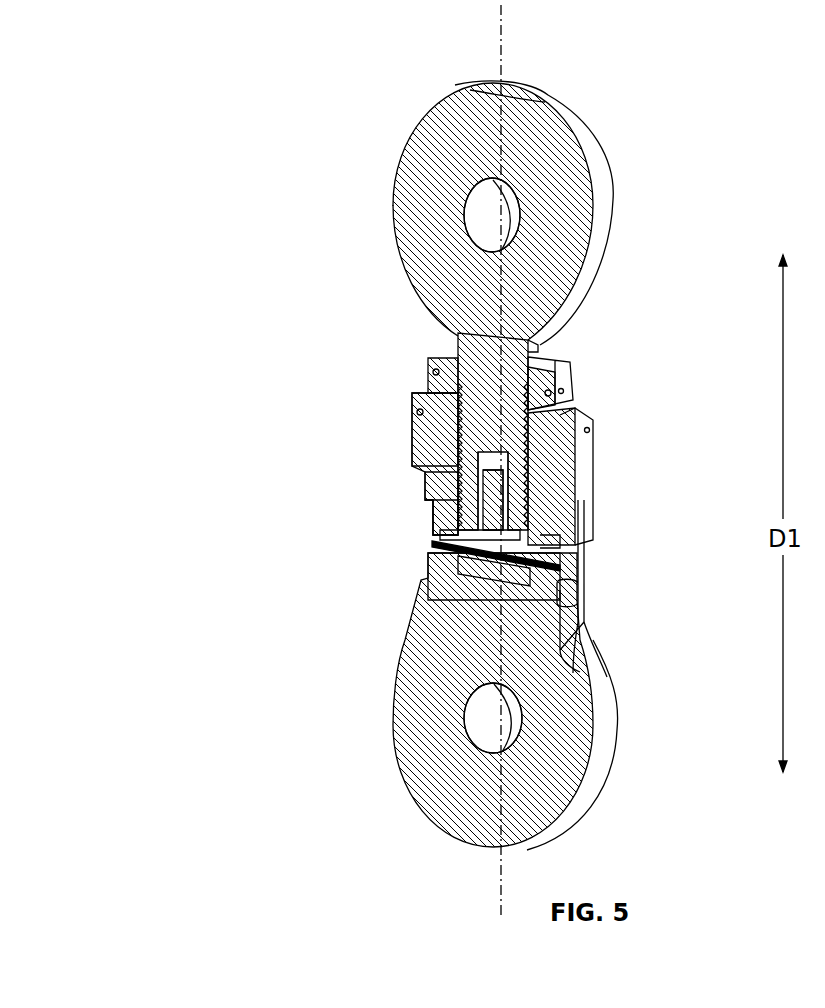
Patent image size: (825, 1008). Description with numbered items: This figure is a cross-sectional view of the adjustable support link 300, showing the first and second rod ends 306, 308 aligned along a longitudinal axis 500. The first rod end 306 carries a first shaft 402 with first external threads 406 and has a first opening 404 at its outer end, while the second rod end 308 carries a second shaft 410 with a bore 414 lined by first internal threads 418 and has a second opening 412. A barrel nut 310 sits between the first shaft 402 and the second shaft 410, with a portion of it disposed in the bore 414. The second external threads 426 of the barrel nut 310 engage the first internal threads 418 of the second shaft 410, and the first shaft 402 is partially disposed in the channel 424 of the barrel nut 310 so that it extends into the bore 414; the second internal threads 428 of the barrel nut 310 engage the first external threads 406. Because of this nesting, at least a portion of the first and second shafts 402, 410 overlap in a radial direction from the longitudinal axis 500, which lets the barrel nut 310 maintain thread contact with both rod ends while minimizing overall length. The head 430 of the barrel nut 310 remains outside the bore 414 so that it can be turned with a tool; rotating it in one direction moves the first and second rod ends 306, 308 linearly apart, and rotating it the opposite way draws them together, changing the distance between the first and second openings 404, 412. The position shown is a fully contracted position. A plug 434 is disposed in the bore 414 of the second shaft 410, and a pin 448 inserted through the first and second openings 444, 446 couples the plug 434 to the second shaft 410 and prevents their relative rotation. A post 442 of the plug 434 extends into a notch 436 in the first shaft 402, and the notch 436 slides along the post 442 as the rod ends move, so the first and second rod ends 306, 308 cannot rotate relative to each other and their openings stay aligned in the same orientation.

The adjustable support link 300 is at (232, 52).
The longitudinal axis 500 is at (500, 20).
The first rod end 306 is at (452, 287).
The first opening 404 is at (490, 215).
The first shaft 402 is at (457, 382).
The first external threads 406 is at (520, 510).
The second internal threads 428 is at (662, 506).
The barrel nut 310 is at (413, 437).
The bore 414 is at (432, 445).
The first internal threads 418 is at (425, 483).
The second external threads 426 is at (364, 511).
The head 430 is at (557, 370).
The channel 424 is at (543, 455).
The pin 448 is at (540, 555).
The plug 434 is at (565, 562).
The notch 436 is at (545, 535).
The post 442 is at (557, 538).
The second shaft 410 is at (430, 535).
The second rod end 308 is at (423, 650).
The second opening 412 is at (492, 718).
The first opening 444 is at (562, 616).
The second opening 446 is at (545, 646).